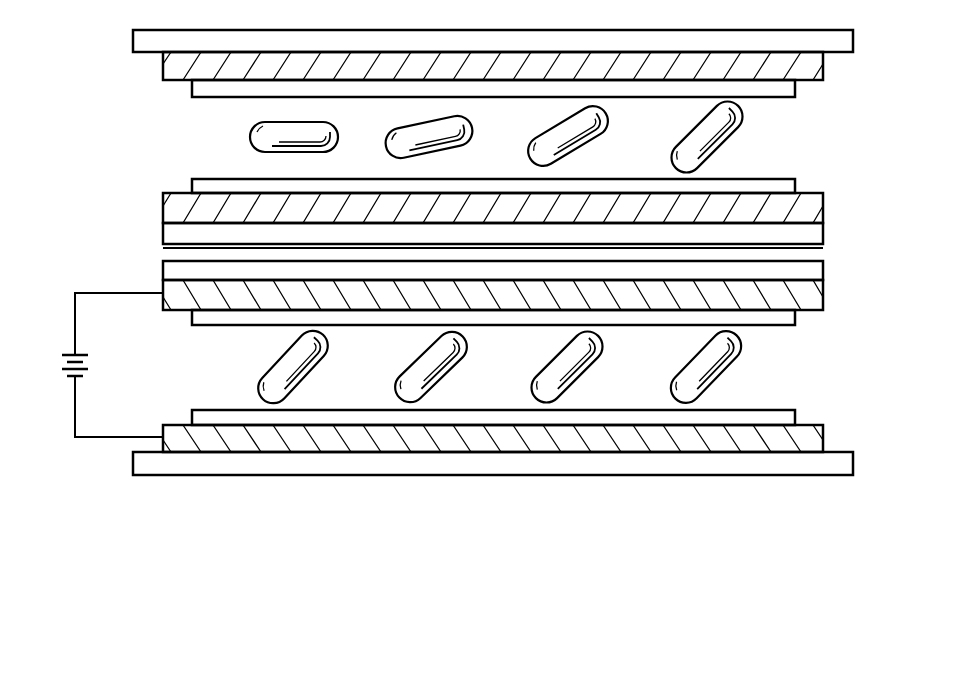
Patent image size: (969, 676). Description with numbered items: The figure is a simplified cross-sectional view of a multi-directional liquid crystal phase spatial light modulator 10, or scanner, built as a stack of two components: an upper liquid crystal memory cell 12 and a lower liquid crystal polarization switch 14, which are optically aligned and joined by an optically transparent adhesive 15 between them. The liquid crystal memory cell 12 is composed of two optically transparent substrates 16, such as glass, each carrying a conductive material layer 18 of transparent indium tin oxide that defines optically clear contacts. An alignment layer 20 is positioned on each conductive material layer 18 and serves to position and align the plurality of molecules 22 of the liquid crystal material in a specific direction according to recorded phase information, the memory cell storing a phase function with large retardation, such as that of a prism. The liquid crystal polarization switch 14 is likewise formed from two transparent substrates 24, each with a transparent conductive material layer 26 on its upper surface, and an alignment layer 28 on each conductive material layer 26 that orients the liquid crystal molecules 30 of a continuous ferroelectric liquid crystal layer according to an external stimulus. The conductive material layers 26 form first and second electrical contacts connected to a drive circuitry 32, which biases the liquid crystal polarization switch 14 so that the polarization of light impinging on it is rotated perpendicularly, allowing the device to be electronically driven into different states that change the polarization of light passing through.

The multi-directional liquid crystal phase spatial light modulator 10 is at (328, 540).
The liquid crystal memory cell 12 is at (150, 120).
The liquid crystal polarization switch 14 is at (150, 350).
The optically transparent adhesive 15 is at (162, 253).
The substrate 16 is at (856, 41).
The conductive material layer 18 is at (823, 81).
The alignment layer 20 is at (237, 98).
The molecules 22 is at (470, 122).
The substrate 24 is at (824, 272).
The conductive material layer 26 is at (818, 311).
The alignment layer 28 is at (237, 326).
The liquid crystal molecules 30 is at (440, 376).
The drive circuitry 32 is at (85, 440).